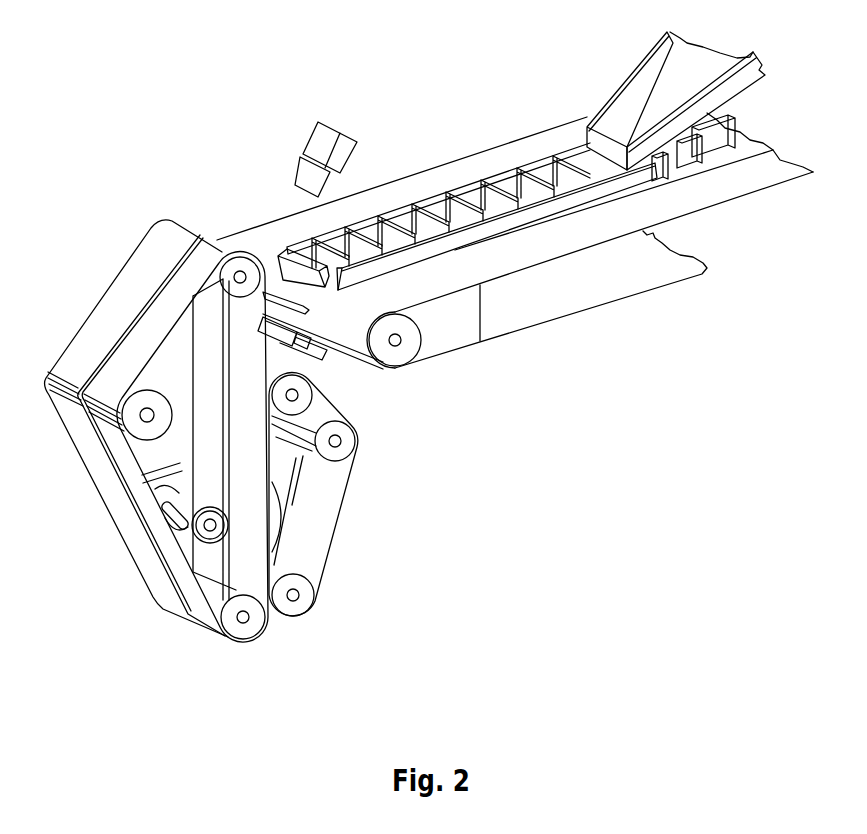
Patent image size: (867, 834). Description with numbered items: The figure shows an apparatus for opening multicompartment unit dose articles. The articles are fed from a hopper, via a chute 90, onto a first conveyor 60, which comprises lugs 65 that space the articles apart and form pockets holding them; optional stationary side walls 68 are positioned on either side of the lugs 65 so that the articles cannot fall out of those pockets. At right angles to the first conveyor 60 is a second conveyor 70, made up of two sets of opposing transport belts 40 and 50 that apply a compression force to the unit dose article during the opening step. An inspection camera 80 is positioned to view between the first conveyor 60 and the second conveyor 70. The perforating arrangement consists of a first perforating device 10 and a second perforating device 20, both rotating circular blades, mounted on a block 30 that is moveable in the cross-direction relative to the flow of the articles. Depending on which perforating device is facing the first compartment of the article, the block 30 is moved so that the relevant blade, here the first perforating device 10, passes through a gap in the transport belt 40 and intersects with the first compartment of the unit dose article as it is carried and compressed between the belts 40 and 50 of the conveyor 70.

The first perforating device 10 is at (198, 534).
The second perforating device 20 is at (273, 498).
The block 30 is at (180, 475).
The transport belt 40 is at (250, 562).
The transport belt 50 is at (275, 567).
The first conveyor 60 is at (483, 267).
The lugs 65 is at (403, 223).
The stationary side walls 68 is at (550, 213).
The conveyor 70 is at (99, 285).
The inspection camera 80 is at (318, 150).
The chute 90 is at (658, 98).